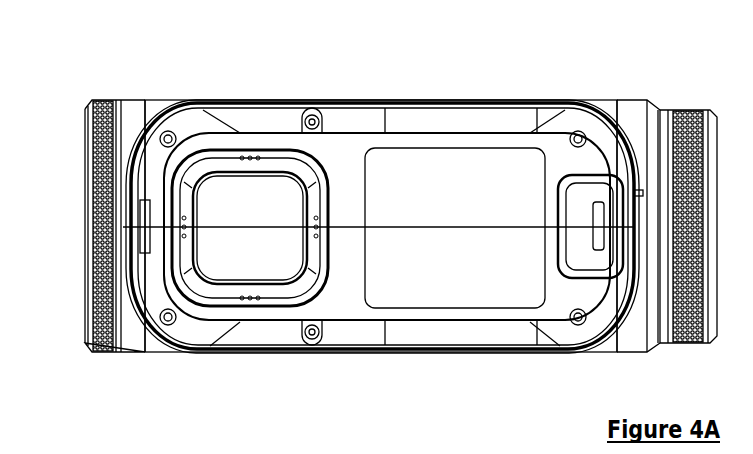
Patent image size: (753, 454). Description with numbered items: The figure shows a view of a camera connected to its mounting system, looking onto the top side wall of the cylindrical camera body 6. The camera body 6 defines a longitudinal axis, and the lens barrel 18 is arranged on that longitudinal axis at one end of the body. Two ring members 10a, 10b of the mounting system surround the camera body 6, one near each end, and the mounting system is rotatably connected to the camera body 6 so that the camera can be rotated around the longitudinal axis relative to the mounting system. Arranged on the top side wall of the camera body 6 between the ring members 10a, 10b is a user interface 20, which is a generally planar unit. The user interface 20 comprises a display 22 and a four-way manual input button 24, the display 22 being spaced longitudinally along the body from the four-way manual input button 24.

The camera body 6 is at (88, 345).
The ring member 10a is at (617, 102).
The ring member 10b is at (150, 100).
The lens barrel 18 is at (685, 110).
The user interface 20 is at (365, 122).
The display 22 is at (459, 282).
The four-way manual input button 24 is at (248, 253).